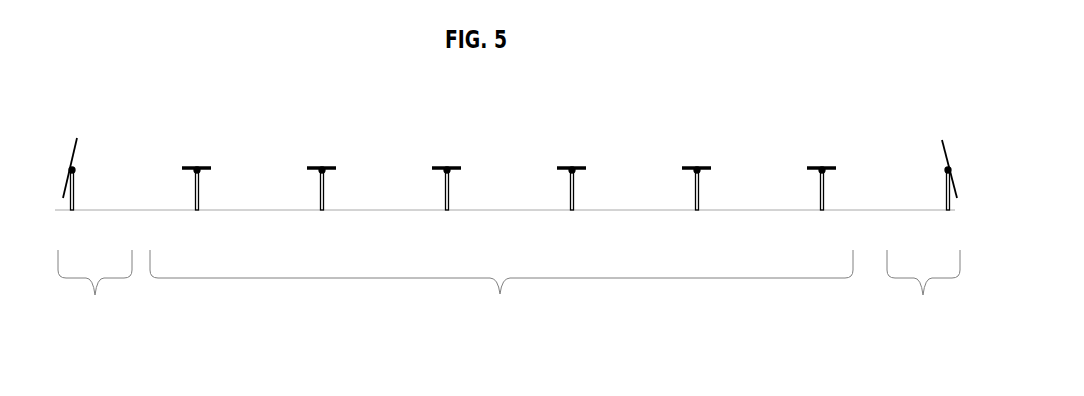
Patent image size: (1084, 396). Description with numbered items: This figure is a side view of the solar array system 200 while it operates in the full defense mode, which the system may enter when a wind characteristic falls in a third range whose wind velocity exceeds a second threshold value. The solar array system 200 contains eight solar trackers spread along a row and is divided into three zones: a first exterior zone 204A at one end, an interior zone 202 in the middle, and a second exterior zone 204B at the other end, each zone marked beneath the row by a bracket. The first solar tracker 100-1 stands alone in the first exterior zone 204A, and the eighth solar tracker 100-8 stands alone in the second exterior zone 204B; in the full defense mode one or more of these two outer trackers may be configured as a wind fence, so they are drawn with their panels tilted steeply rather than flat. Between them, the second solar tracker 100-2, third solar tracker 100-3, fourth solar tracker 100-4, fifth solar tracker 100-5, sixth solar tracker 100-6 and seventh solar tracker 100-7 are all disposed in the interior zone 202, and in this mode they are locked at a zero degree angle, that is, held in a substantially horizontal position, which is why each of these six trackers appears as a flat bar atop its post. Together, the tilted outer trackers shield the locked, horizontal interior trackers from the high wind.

The solar array system 200 is at (241, 75).
The first solar tracker 100-1 is at (72, 170).
The second solar tracker 100-2 is at (197, 168).
The third solar tracker 100-3 is at (322, 168).
The fourth solar tracker 100-4 is at (447, 168).
The fifth solar tracker 100-5 is at (572, 168).
The sixth solar tracker 100-6 is at (697, 212).
The seventh solar tracker 100-7 is at (822, 212).
The eighth solar tracker 100-8 is at (948, 170).
The first exterior zone 204A is at (95, 291).
The interior zone 202 is at (501, 291).
The second exterior zone 204B is at (923, 291).